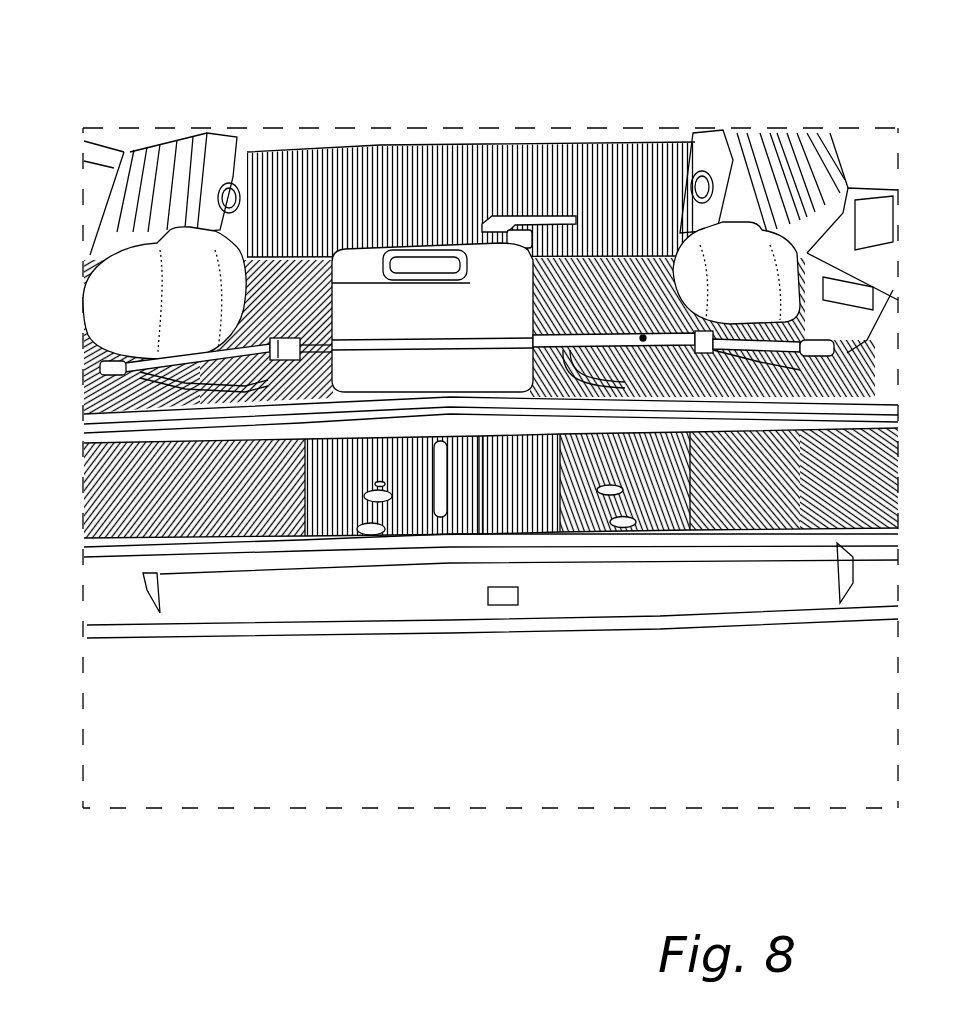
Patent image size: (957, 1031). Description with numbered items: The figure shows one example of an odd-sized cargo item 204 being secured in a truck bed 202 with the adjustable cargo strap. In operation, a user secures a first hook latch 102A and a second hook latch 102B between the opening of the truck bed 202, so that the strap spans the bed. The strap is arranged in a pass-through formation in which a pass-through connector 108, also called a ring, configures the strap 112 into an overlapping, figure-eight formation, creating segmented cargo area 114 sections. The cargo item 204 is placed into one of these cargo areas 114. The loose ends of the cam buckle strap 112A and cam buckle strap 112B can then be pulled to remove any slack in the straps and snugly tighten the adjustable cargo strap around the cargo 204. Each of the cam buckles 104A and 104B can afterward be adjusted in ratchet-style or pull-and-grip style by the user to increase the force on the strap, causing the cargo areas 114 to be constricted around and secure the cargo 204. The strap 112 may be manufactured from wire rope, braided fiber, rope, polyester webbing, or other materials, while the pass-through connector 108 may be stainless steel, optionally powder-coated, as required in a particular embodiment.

The first hook latch 102A is at (127, 367).
The second hook latch 102B is at (833, 347).
The cam buckle 104A is at (268, 348).
The cam buckle 104B is at (640, 337).
The pass-through connector 108 is at (543, 337).
The strap 112 is at (787, 367).
The cam buckle strap 112A is at (250, 372).
The cam buckle strap 112B is at (637, 385).
The cargo area 114 is at (505, 345).
The truck bed 202 is at (120, 517).
The cargo item 204 is at (413, 370).